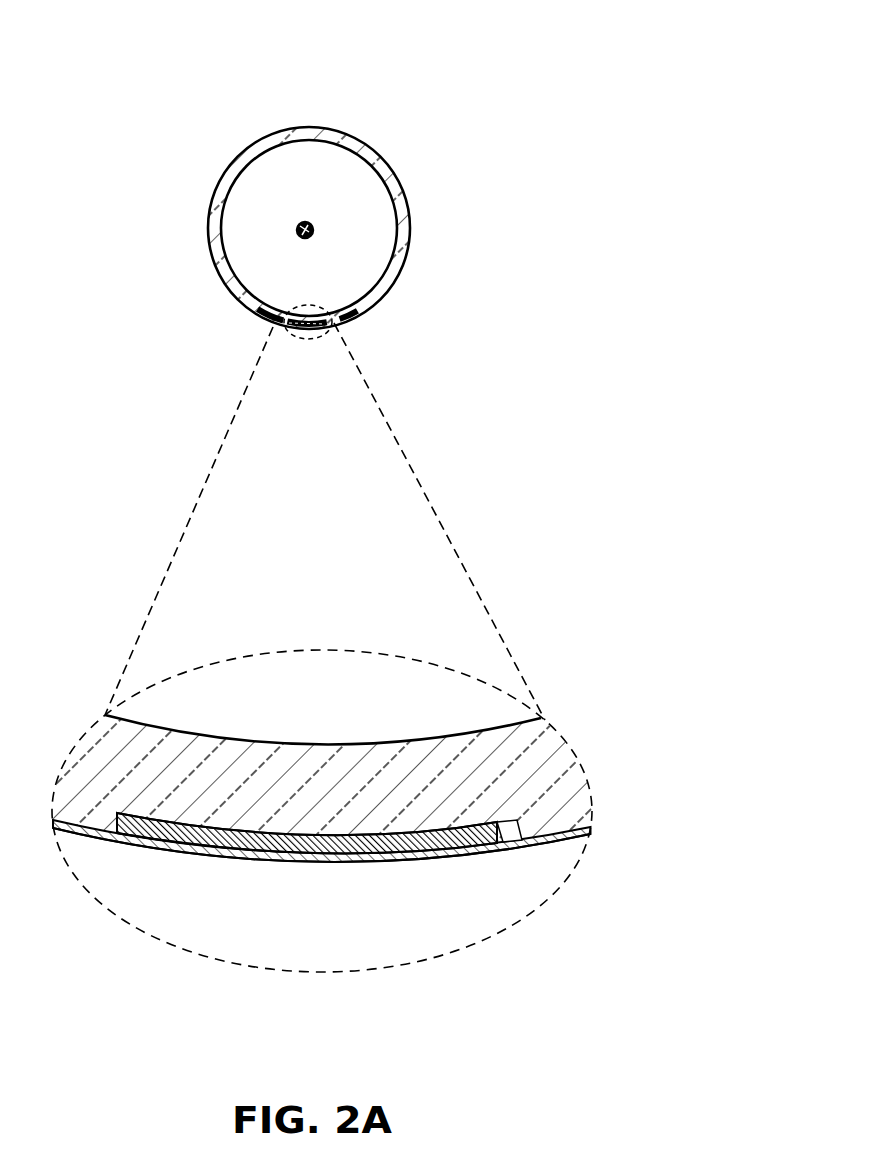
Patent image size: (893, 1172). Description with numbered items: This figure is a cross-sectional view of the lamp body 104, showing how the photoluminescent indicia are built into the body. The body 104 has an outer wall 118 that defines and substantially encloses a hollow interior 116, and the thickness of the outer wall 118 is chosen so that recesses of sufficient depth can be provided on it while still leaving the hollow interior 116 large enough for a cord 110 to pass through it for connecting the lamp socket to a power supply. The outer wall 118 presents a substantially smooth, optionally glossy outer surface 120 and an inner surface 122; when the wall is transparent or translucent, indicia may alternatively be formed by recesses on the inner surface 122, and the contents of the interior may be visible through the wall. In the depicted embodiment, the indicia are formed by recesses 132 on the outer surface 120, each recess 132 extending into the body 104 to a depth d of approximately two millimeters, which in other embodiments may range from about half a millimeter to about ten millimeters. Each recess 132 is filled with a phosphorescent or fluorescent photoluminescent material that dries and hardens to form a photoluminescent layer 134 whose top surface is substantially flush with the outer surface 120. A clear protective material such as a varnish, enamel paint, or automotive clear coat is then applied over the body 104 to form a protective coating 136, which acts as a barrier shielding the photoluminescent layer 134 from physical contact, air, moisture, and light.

The body 104 is at (322, 467).
The cord 110 is at (297, 232).
The hollow interior 116 is at (362, 203).
The outer wall 118 is at (372, 150).
The outer surface 120 is at (410, 236).
The inner surface 122 is at (383, 276).
The recess 132 is at (257, 316).
The photoluminescent layer 134 is at (382, 848).
The protective coating 136 is at (318, 863).
The depth d is at (523, 830).